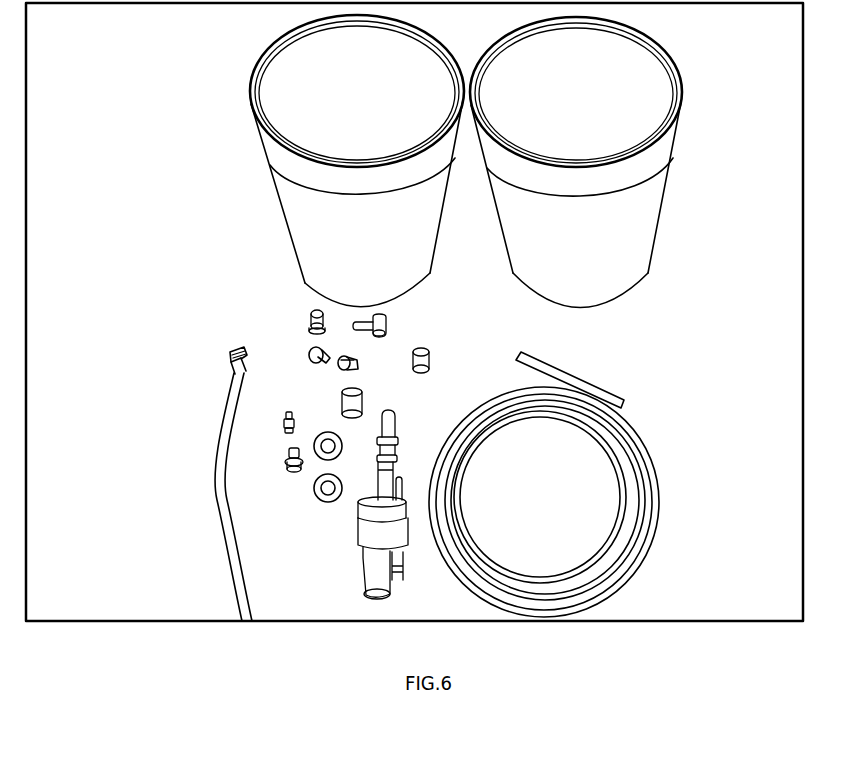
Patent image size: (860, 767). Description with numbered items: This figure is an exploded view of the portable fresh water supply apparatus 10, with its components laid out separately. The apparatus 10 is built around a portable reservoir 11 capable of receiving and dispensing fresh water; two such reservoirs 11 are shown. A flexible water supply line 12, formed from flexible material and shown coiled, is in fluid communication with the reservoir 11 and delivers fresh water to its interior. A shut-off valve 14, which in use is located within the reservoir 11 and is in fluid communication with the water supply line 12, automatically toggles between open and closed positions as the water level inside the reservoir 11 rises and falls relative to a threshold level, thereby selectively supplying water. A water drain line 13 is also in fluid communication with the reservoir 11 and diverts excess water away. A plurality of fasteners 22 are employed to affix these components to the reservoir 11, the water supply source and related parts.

The portable fresh water supply apparatus 10 is at (178, 257).
The portable reservoir 11 is at (290, 225).
The flexible water supply line 12 is at (623, 451).
The water drain line 13 is at (217, 483).
The shut-off valve 14 is at (377, 533).
The fasteners 22 is at (288, 352).